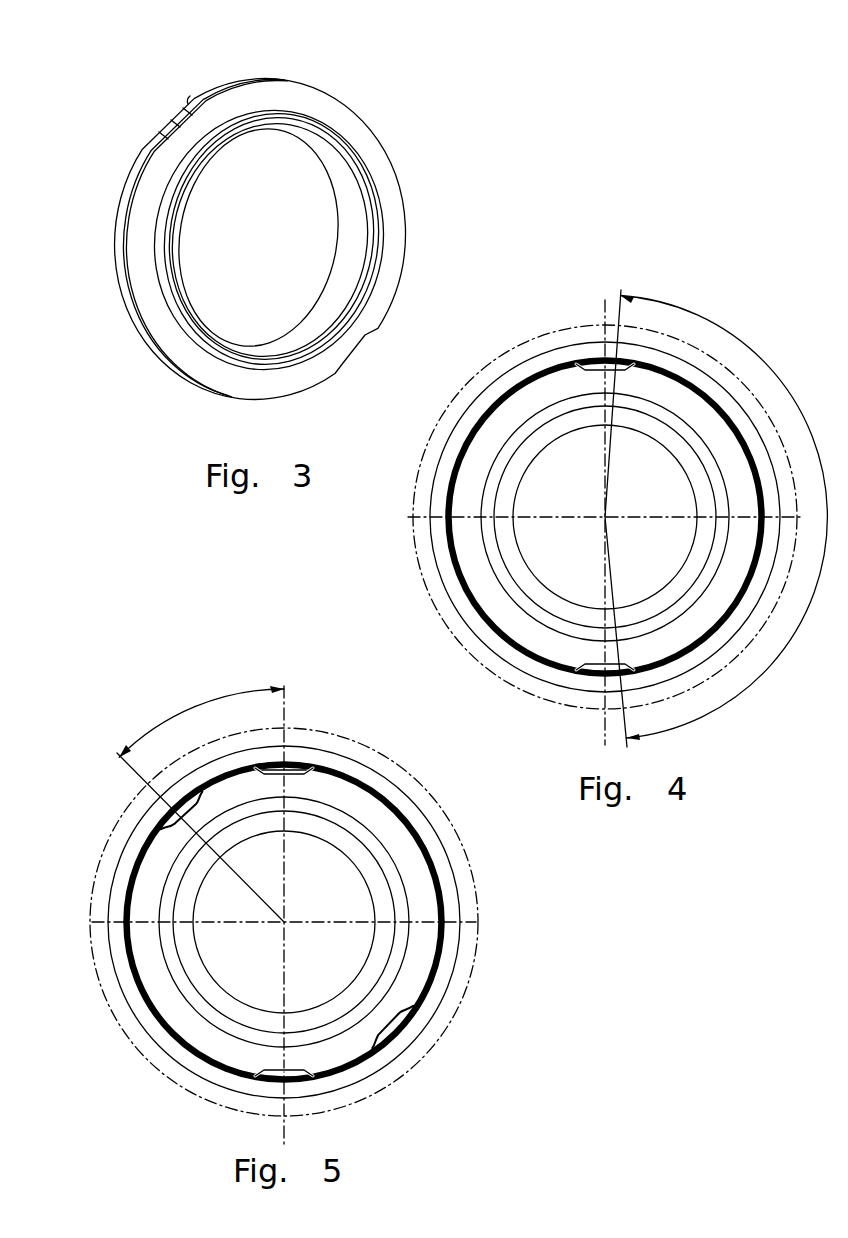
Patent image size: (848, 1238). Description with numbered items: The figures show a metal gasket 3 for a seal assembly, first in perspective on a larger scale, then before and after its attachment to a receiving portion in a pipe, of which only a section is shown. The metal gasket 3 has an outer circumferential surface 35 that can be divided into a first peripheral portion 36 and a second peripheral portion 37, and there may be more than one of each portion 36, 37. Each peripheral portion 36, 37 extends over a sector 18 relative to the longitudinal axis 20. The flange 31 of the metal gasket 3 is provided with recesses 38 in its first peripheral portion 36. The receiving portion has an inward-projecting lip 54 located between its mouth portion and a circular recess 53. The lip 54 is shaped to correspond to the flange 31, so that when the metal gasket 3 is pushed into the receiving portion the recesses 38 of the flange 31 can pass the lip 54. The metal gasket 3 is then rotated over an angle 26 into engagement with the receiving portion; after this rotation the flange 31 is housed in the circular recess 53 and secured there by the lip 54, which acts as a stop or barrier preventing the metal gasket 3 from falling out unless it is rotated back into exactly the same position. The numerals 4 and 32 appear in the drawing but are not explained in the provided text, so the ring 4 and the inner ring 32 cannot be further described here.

In FIG. 3, the metal gasket 3 is at (281, 209).
In FIG. 4, the housing 4 is at (442, 558).
In FIG. 5, the housing 4 is at (122, 960).
In FIG. 4, the sector 18 is at (744, 342).
In FIG. 4, the longitudinal axis 20 is at (605, 517).
In FIG. 5, the longitudinal axis 20 is at (284, 922).
In FIG. 5, the angle 26 is at (213, 702).
In FIG. 3, the flange 31 is at (307, 92).
In FIG. 4, the flange 31 is at (440, 538).
In FIG. 5, the flange 31 is at (147, 853).
In FIG. 3, the inner ring 32 is at (248, 127).
In FIG. 3, the outer circumferential surface 35 is at (143, 340).
In FIG. 3, the first peripheral portion 36 is at (160, 107).
In FIG. 3, the second peripheral portion 37 is at (118, 221).
In FIG. 3, the recess 38 is at (168, 131).
In FIG. 4, the circular recess 53 is at (622, 296).
In FIG. 5, the circular recess 53 is at (292, 760).
In FIG. 4, the lip 54 is at (602, 372).
In FIG. 5, the lip 54 is at (287, 760).